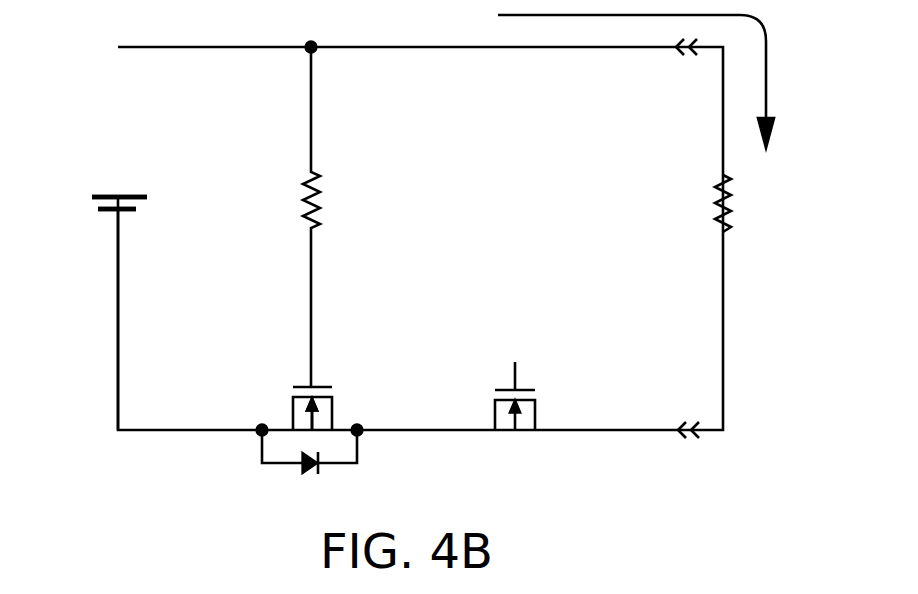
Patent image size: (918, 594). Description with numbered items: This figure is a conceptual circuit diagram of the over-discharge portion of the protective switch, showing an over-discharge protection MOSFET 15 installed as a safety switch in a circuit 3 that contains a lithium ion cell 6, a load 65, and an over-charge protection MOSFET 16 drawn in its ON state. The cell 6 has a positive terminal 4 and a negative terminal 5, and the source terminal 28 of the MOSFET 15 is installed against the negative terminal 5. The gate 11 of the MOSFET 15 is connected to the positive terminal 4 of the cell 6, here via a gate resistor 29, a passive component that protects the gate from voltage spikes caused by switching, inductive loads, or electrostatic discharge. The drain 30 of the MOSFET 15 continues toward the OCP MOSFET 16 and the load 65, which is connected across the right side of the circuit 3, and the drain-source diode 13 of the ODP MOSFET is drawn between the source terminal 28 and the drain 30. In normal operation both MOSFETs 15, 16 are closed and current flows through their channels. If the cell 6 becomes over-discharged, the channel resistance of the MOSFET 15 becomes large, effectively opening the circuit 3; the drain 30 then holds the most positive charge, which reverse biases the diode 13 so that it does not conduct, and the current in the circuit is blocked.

The circuit 3 is at (395, 46).
The positive terminal 4 is at (110, 196).
The negative terminal 5 is at (112, 210).
The lithium ion cell 6 is at (147, 188).
The gate resistor 29 is at (322, 186).
The load 65 is at (732, 190).
The gate 11 is at (322, 386).
The over-discharge protection MOSFET 15 is at (346, 408).
The over-charge protection MOSFET 16 is at (549, 410).
The source terminal 28 is at (260, 426).
The drain 30 is at (360, 433).
The drain-source diode 13 is at (303, 467).